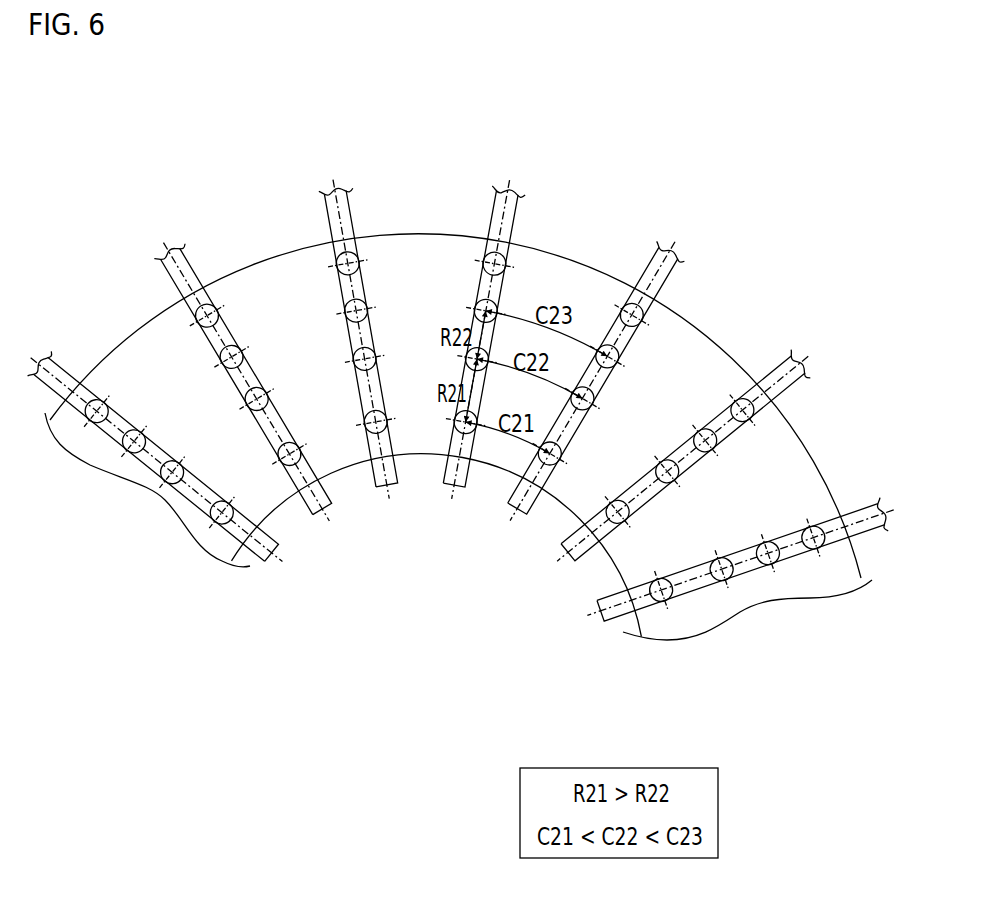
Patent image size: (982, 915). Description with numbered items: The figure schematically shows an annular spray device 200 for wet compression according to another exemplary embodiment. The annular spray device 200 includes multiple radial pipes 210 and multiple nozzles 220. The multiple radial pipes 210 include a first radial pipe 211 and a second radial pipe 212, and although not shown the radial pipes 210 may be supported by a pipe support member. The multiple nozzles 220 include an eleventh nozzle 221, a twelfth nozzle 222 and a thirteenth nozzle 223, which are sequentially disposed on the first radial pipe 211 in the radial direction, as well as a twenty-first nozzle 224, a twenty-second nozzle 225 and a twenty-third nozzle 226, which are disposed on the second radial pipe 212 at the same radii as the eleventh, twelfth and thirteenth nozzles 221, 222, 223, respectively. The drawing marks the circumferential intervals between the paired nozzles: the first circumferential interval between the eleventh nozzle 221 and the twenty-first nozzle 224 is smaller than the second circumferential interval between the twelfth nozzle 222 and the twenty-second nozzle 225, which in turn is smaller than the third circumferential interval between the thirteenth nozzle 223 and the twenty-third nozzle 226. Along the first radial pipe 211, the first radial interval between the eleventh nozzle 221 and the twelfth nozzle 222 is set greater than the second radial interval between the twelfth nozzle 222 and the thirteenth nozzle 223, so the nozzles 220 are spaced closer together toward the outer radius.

The annular spray device 200 is at (698, 207).
The radial pipes 210 is at (459, 357).
The first radial pipe 211 is at (492, 214).
The second radial pipe 212 is at (661, 286).
The nozzles 220 is at (594, 363).
The eleventh nozzle 221 is at (455, 426).
The twelfth nozzle 222 is at (466, 360).
The thirteenth nozzle 223 is at (474, 311).
The twenty-first nozzle 224 is at (557, 463).
The twenty-second nozzle 225 is at (594, 401).
The twenty-third nozzle 226 is at (608, 360).